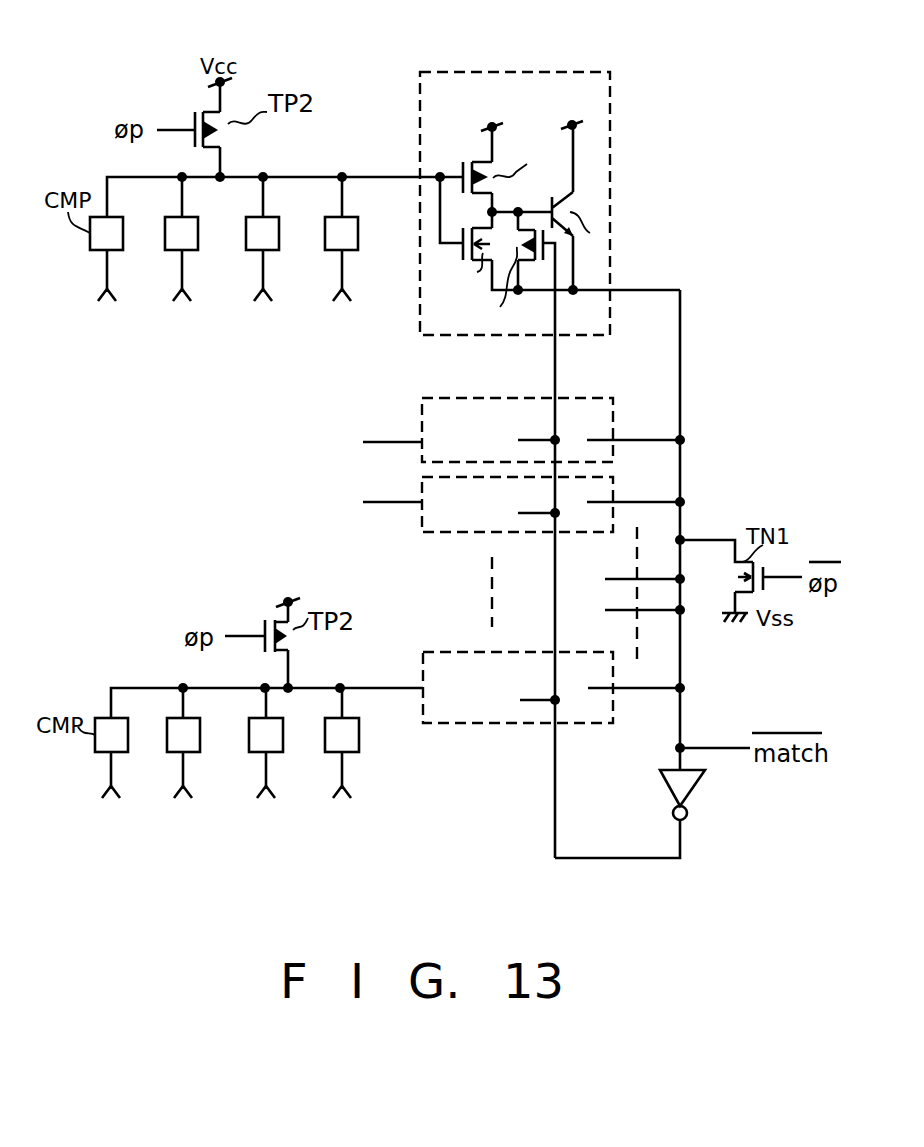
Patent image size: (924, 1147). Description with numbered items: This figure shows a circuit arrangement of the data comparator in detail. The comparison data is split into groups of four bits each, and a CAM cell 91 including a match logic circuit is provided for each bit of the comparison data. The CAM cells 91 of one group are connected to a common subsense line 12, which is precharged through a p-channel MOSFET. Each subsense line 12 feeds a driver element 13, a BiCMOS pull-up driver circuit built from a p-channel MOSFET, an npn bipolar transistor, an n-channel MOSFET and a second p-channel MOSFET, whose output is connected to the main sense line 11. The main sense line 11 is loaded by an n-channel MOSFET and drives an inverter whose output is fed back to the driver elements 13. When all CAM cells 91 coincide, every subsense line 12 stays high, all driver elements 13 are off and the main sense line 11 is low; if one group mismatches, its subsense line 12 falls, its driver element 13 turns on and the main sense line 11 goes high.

The main sense line 11 is at (680, 366).
The subsense line 12 is at (305, 687).
The driver element 13 is at (505, 72).
The CAM cell 91 is at (230, 523).